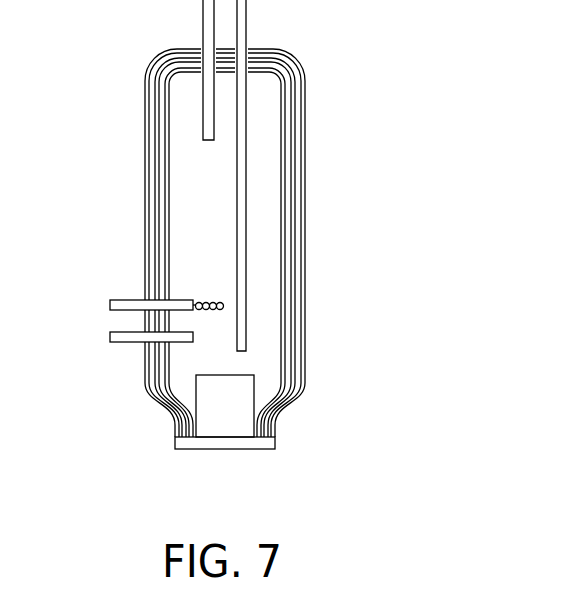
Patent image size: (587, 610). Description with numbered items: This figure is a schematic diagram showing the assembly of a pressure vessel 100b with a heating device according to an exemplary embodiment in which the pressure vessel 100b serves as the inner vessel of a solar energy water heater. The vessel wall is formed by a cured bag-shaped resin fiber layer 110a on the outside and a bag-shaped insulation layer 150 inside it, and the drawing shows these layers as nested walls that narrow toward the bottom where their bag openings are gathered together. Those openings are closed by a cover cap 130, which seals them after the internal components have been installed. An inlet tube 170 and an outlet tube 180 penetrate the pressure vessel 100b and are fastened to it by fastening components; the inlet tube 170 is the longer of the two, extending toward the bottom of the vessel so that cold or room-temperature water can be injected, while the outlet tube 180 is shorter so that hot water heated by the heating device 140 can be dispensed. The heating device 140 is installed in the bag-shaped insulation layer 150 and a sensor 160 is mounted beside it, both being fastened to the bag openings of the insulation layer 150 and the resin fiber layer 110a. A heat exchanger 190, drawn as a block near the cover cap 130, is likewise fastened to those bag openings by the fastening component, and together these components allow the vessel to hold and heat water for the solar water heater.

The cured bag-shaped resin fiber layer 110a is at (300, 142).
The bag-shaped insulation layer 150 is at (287, 307).
The outlet tube 180 is at (208, 108).
The inlet tube 170 is at (244, 207).
The heating device 140 is at (127, 304).
The sensor 160 is at (127, 338).
The heat exchanger 190 is at (242, 388).
The cover cap 130 is at (192, 445).
The pressure vessel 100b is at (492, 462).